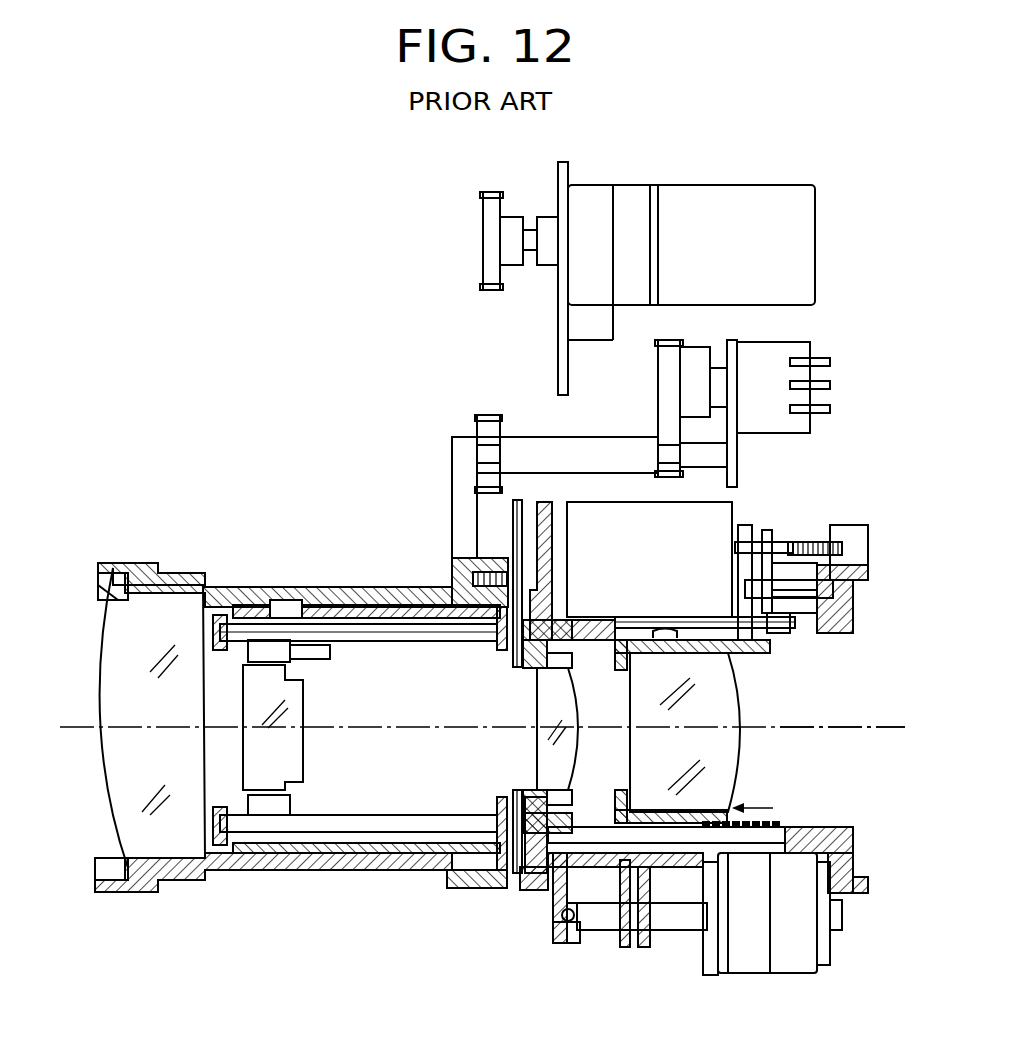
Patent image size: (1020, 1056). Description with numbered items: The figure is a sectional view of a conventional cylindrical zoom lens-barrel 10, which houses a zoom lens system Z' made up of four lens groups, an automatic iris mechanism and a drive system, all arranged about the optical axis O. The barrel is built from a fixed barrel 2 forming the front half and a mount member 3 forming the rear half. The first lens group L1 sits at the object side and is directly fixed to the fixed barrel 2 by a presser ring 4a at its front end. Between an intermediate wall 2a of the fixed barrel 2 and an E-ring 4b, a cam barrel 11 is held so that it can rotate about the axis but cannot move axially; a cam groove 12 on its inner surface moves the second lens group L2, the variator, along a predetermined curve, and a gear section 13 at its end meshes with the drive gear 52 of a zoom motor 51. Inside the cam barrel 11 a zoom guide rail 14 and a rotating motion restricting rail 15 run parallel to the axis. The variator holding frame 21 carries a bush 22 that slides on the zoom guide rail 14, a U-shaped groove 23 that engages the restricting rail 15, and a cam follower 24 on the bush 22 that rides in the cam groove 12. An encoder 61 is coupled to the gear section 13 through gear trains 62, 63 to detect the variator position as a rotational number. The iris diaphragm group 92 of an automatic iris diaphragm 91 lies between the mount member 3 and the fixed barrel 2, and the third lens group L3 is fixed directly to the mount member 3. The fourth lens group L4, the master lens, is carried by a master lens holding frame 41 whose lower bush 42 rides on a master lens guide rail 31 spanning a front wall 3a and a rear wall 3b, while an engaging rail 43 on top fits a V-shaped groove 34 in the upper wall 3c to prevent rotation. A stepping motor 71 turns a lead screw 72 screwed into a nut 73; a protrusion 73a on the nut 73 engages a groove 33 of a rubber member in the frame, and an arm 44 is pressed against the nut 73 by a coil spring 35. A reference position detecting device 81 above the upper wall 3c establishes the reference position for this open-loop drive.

The zoom lens-barrel 10 is at (385, 430).
The fixed barrel 2 is at (182, 585).
The intermediate wall 2a is at (220, 672).
The presser ring 4a is at (103, 593).
The E-ring 4b is at (499, 640).
The optical axis O is at (95, 732).
The first lens group L1 is at (118, 665).
The second lens group L2 is at (300, 745).
The third lens group L3 is at (540, 745).
The fourth lens group L4 is at (740, 712).
The cam barrel 11 is at (250, 870).
The cam groove 12 is at (295, 605).
The gear section 13 is at (462, 888).
The zoom guide rail 14 is at (405, 648).
The rotating motion restricting rail 15 is at (388, 815).
The variator holding frame 21 is at (292, 664).
The bush 22 is at (316, 659).
The U-shaped groove 23 is at (300, 812).
The cam follower 24 is at (305, 600).
The mount member 3 is at (528, 902).
The front wall 3a is at (515, 655).
The rear wall 3b is at (835, 634).
The upper wall 3c is at (578, 622).
The master lens guide rail 31 is at (562, 833).
The groove 33 is at (556, 944).
The V-shaped groove 34 is at (608, 641).
The coil spring 35 is at (778, 825).
The master lens holding frame 41 is at (745, 653).
The bush 42 is at (615, 790).
The engaging rail 43 is at (665, 631).
The arm 44 is at (648, 946).
The zoom motor 51 is at (708, 185).
The drive gear 52 is at (486, 240).
The encoder 61 is at (790, 433).
The gear train 62 is at (565, 437).
The gear train 63 is at (688, 347).
The stepping motor 71 is at (742, 975).
The lead screw 72 is at (612, 931).
The nut 73 is at (628, 948).
The protrusion 73a is at (612, 904).
The reference position detecting device 81 is at (790, 532).
The automatic iris diaphragm 91 is at (733, 505).
The iris diaphragm group 92 is at (515, 537).
The zoom lens system Z' is at (842, 757).